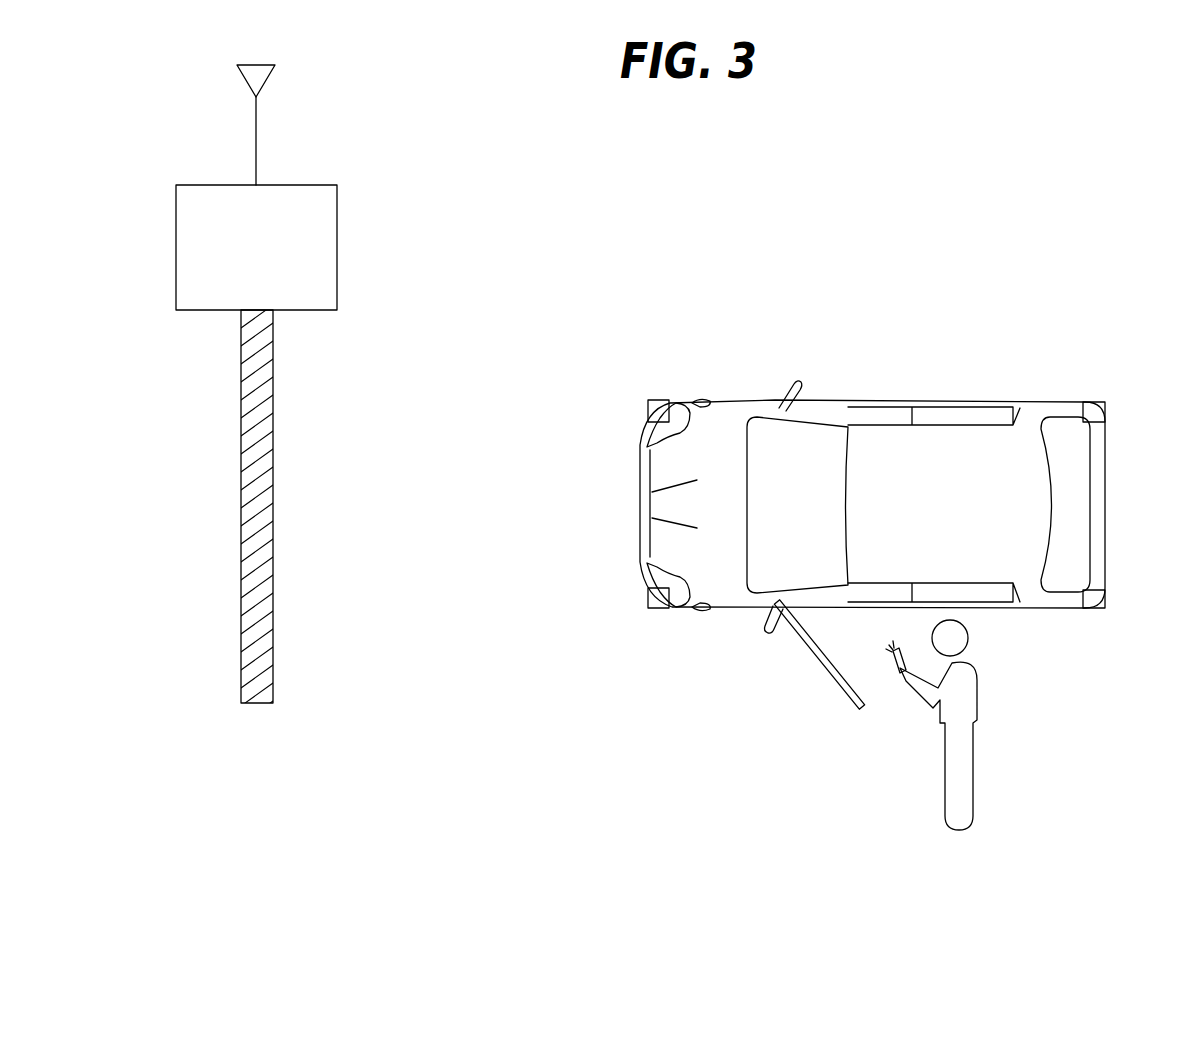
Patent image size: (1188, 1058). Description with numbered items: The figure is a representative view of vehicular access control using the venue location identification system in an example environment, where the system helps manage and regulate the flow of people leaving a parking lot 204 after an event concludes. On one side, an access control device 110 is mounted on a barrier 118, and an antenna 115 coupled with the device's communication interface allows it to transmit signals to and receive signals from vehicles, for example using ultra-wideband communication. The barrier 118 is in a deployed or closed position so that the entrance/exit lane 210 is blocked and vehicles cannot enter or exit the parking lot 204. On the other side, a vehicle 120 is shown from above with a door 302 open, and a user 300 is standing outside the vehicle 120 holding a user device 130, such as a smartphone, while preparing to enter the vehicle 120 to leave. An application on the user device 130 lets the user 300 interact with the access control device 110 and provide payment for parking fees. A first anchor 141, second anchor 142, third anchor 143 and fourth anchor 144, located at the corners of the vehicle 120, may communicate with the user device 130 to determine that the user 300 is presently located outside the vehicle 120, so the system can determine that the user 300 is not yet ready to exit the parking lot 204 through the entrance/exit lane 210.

The antenna 115 is at (270, 82).
The access control device 110 is at (308, 185).
The barrier 118 is at (274, 480).
The entrance/exit lane 210 is at (195, 537).
The vehicle 120 is at (952, 515).
The fourth anchor 144 is at (660, 400).
The third anchor 143 is at (658, 609).
The first anchor 141 is at (1093, 402).
The second anchor 142 is at (1093, 608).
The parking lot 204 is at (968, 317).
The door 302 is at (818, 655).
The user 300 is at (977, 702).
The user device 130 is at (891, 666).